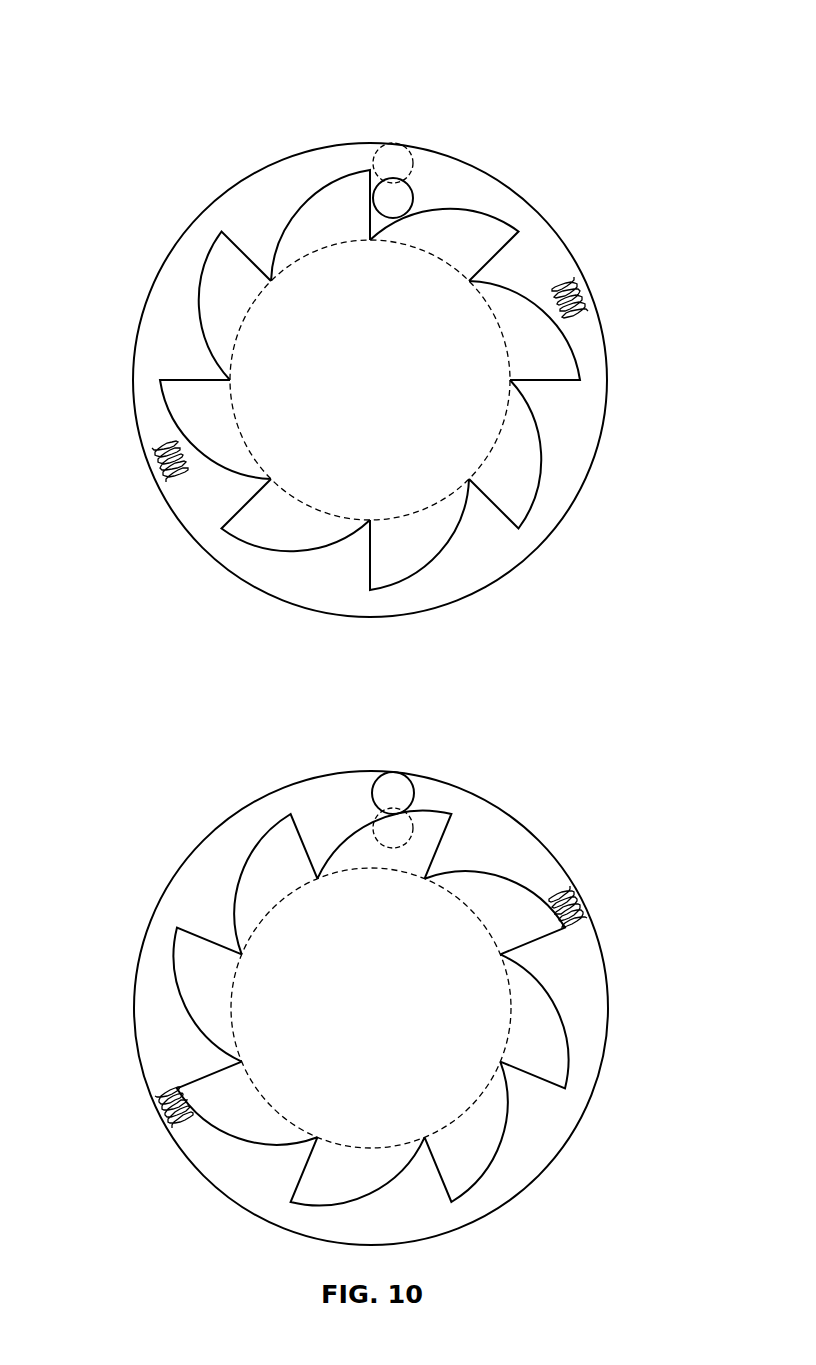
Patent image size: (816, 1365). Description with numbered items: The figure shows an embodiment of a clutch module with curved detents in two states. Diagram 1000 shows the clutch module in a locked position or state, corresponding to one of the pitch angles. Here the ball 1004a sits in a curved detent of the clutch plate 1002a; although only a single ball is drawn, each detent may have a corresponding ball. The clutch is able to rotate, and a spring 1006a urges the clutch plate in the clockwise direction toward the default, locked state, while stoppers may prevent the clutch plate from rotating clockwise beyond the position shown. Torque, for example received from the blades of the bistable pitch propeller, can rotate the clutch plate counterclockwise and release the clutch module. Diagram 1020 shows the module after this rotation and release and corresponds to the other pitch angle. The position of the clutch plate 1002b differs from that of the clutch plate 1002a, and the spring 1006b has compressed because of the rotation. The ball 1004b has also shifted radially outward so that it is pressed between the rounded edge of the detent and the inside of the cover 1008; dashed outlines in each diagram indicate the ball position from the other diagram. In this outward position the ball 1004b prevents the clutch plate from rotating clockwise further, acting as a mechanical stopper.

The diagram 1000 is at (664, 56).
The clutch plate 1002a is at (208, 252).
The ball 1004a is at (414, 198).
The spring 1006a is at (587, 276).
The diagram 1020 is at (643, 712).
The clutch plate 1002b is at (168, 935).
The ball 1004b is at (395, 772).
The spring 1006b is at (575, 888).
The cover 1008 is at (610, 983).